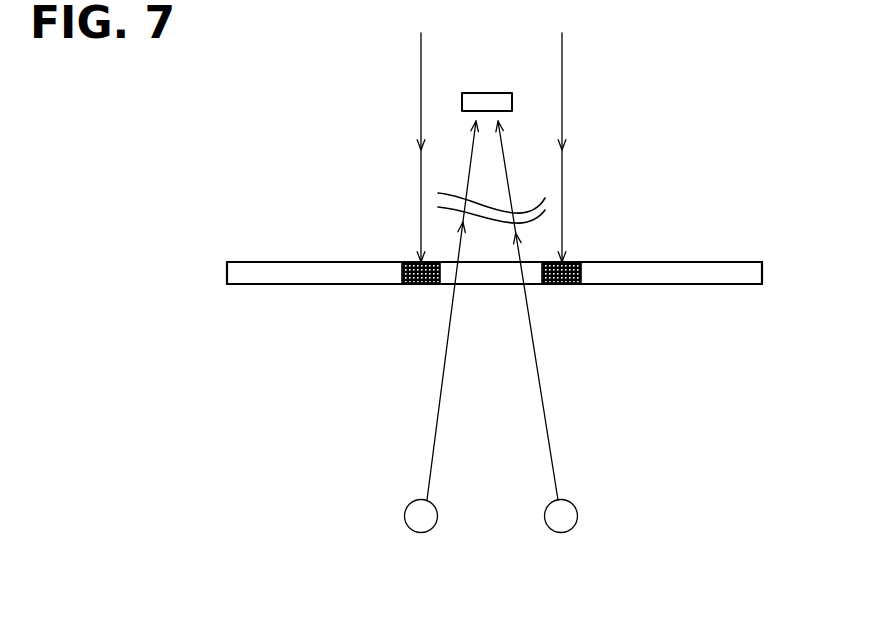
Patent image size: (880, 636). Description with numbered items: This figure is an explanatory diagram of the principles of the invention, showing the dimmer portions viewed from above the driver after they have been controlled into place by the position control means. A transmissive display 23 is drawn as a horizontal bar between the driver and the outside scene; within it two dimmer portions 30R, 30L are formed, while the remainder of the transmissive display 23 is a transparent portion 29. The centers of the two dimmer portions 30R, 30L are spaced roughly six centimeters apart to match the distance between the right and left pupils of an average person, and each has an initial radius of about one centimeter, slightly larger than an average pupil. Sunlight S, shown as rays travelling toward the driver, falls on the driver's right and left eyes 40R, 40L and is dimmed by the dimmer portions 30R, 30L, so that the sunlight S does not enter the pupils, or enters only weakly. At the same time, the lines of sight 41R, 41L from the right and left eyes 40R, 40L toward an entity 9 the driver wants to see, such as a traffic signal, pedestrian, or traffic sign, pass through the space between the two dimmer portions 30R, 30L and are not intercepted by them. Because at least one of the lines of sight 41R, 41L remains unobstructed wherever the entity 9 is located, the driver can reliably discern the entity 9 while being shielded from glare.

The entity 9 is at (490, 93).
The transmissive display 23 is at (712, 263).
The transparent portion 29 is at (637, 282).
The dimmer portion 30L is at (408, 284).
The dimmer portion 30R is at (573, 284).
The left eye 40L is at (420, 532).
The right eye 40R is at (563, 532).
The line of sight 41L is at (430, 447).
The line of sight 41R is at (550, 447).
The sunlight S is at (490, 136).